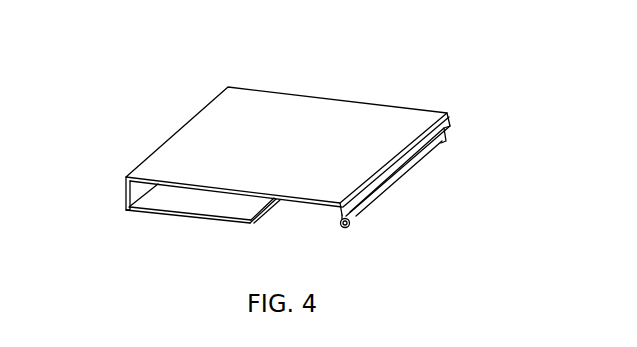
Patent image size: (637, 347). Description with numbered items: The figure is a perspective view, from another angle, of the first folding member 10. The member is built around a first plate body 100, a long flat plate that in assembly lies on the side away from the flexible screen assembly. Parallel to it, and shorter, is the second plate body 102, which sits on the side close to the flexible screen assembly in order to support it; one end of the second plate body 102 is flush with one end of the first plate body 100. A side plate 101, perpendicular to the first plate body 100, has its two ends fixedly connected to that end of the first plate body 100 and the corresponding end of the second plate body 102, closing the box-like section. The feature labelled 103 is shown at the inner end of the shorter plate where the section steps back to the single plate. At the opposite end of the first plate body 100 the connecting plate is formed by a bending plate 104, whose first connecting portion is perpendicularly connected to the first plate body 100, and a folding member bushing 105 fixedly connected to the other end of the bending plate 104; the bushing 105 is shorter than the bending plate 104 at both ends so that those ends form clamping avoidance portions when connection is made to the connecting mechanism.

The first folding member 10 is at (348, 98).
The first plate body 100 is at (305, 108).
The side plate 101 is at (127, 193).
The second plate body 102 is at (205, 218).
The inclined step 103 is at (265, 219).
The bending plate 104 is at (357, 208).
The folding member bushing 105 is at (347, 228).